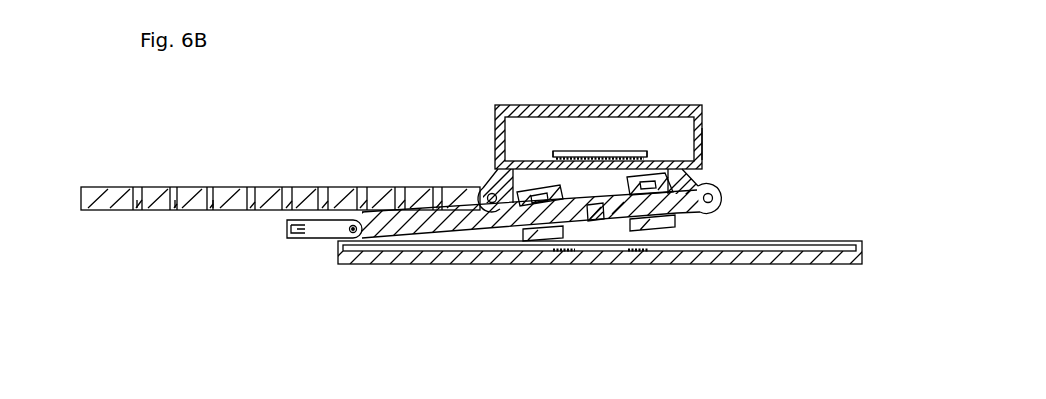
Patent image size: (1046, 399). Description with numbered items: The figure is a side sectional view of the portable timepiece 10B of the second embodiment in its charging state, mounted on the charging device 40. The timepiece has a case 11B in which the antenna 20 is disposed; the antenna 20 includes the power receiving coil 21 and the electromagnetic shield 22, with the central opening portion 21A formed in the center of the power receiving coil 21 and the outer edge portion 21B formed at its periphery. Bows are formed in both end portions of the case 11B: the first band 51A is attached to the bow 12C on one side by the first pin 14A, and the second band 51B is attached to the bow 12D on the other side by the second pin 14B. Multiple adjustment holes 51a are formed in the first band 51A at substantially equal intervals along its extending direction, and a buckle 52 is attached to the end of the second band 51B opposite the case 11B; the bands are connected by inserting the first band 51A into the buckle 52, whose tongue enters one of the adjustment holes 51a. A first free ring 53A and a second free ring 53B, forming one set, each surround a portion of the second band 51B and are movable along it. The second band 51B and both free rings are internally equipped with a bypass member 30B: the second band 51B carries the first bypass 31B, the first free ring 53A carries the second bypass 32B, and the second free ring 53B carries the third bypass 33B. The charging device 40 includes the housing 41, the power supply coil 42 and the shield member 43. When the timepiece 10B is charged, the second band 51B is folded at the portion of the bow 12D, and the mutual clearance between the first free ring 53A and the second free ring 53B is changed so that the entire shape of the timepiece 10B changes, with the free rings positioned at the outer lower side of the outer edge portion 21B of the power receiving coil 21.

The portable timepiece 10B is at (713, 93).
The case 11B is at (703, 125).
The bow 12C is at (498, 182).
The bow 12D is at (700, 178).
The first pin 14A is at (488, 197).
The second pin 14B is at (717, 197).
The antenna 20 is at (632, 137).
The power receiving coil 21 is at (703, 143).
The central opening portion 21A is at (647, 152).
The outer edge portion 21B is at (547, 152).
The electromagnetic shield 22 is at (613, 140).
The bypass member 30B is at (585, 193).
The first bypass 31B is at (595, 222).
The second bypass 32B is at (700, 217).
The third bypass 33B is at (535, 197).
The charging device 40 is at (768, 268).
The housing 41 is at (815, 264).
The power supply coil 42 is at (648, 252).
The shield member 43 is at (580, 251).
The first band 51A is at (198, 197).
The adjustment holes 51a is at (213, 208).
The second band 51B is at (618, 213).
The buckle 52 is at (308, 243).
The first free ring 53A is at (653, 190).
The second free ring 53B is at (547, 237).